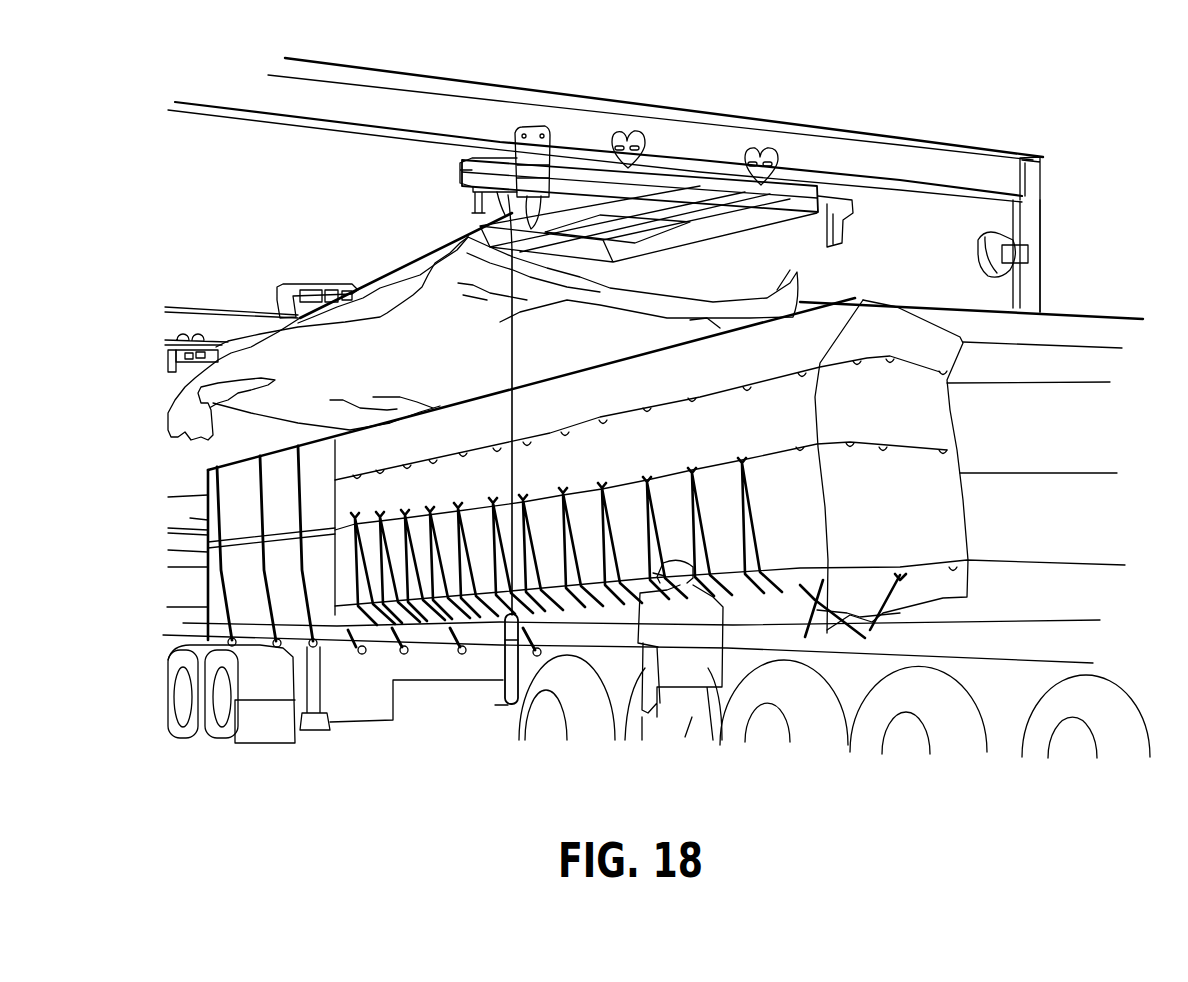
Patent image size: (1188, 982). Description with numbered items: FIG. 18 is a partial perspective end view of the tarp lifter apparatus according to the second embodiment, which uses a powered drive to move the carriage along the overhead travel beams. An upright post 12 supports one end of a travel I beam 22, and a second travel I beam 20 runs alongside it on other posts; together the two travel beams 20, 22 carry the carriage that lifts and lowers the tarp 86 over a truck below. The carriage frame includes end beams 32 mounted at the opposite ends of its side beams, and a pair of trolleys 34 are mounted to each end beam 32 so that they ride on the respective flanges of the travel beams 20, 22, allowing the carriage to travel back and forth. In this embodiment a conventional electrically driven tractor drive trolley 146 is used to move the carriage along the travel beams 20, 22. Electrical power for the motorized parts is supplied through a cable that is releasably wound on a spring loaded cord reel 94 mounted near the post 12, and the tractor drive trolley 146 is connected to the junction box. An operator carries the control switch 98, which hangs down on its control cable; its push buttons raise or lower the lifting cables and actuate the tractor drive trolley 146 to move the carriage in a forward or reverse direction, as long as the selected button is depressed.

The upright post 12 is at (1030, 297).
The travel I beam 20 is at (880, 156).
The travel I beam 22 is at (217, 325).
The end beam 32 is at (727, 195).
The trolley 34 is at (637, 136).
The tarp 86 is at (403, 290).
The spring loaded cord reel 94 is at (1013, 250).
The control switch 98 is at (508, 690).
The tractor drive trolley 146 is at (460, 158).